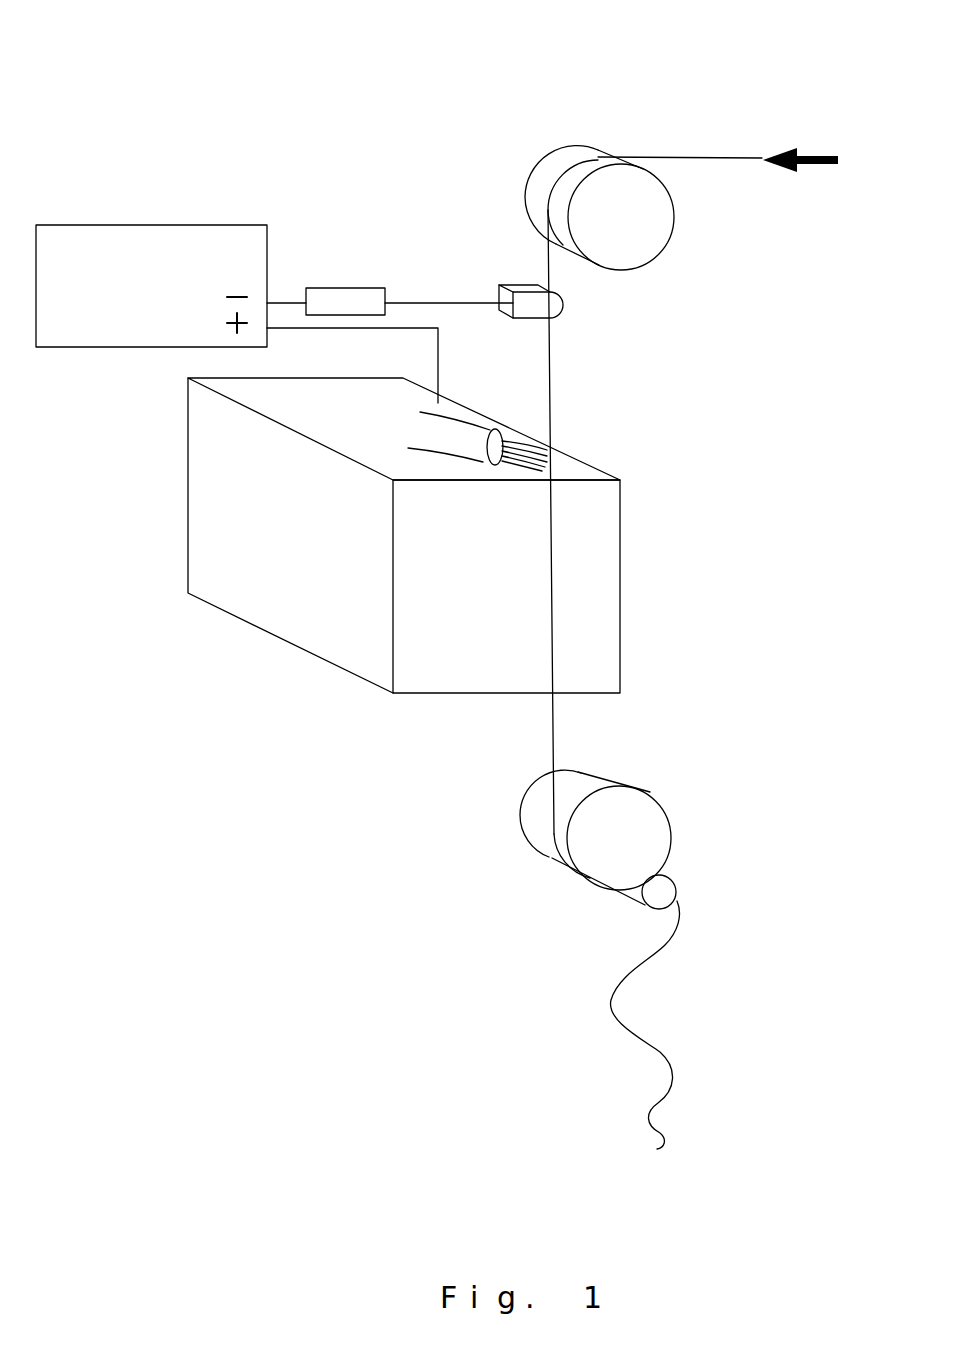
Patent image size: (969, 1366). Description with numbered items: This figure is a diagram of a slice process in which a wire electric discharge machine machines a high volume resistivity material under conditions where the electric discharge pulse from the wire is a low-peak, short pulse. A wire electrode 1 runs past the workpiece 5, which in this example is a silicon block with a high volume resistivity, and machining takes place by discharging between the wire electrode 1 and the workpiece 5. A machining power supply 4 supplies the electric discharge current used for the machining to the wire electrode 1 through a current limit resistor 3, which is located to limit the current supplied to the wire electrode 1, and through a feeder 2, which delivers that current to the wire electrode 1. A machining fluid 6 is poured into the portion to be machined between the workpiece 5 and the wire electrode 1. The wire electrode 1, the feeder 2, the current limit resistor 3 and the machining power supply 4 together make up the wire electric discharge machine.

The wire electrode 1 is at (663, 152).
The feeder 2 is at (562, 305).
The current limit resistor 3 is at (322, 297).
The machining power supply 4 is at (118, 237).
The workpiece 5 is at (590, 587).
The machining fluid 6 is at (540, 447).